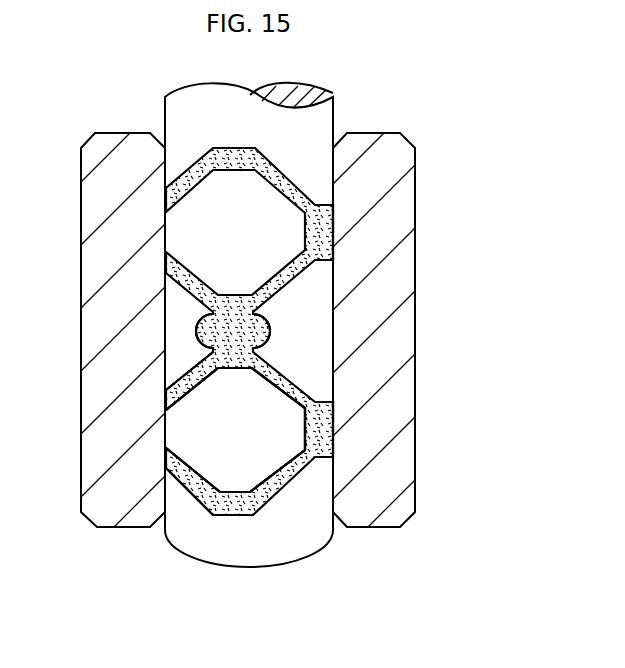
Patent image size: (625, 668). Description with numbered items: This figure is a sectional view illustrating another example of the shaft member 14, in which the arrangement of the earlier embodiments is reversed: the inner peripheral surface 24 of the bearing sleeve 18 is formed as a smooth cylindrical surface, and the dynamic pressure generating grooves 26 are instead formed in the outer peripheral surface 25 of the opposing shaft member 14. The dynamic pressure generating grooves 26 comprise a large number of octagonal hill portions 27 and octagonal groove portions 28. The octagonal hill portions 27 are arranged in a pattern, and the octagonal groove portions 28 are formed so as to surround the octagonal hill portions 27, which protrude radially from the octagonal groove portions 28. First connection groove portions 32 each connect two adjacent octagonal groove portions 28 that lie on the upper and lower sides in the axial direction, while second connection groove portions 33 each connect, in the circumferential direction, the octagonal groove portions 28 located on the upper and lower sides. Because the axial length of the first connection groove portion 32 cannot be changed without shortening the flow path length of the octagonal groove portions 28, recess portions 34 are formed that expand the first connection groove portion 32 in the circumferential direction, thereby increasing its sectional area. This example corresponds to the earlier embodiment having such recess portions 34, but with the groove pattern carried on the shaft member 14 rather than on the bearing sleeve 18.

The shaft member 14 is at (337, 113).
The bearing sleeve 18 is at (433, 228).
The inner peripheral surface 24 is at (333, 327).
The outer peripheral surface 25 is at (166, 385).
The dynamic pressure generating grooves 26 is at (280, 606).
The octagonal hill portions 27 is at (253, 457).
The octagonal groove portions 28 is at (204, 490).
The first connection groove portion 32 is at (236, 343).
The second connection groove portion 33 is at (333, 200).
The recess portions 34 is at (200, 323).